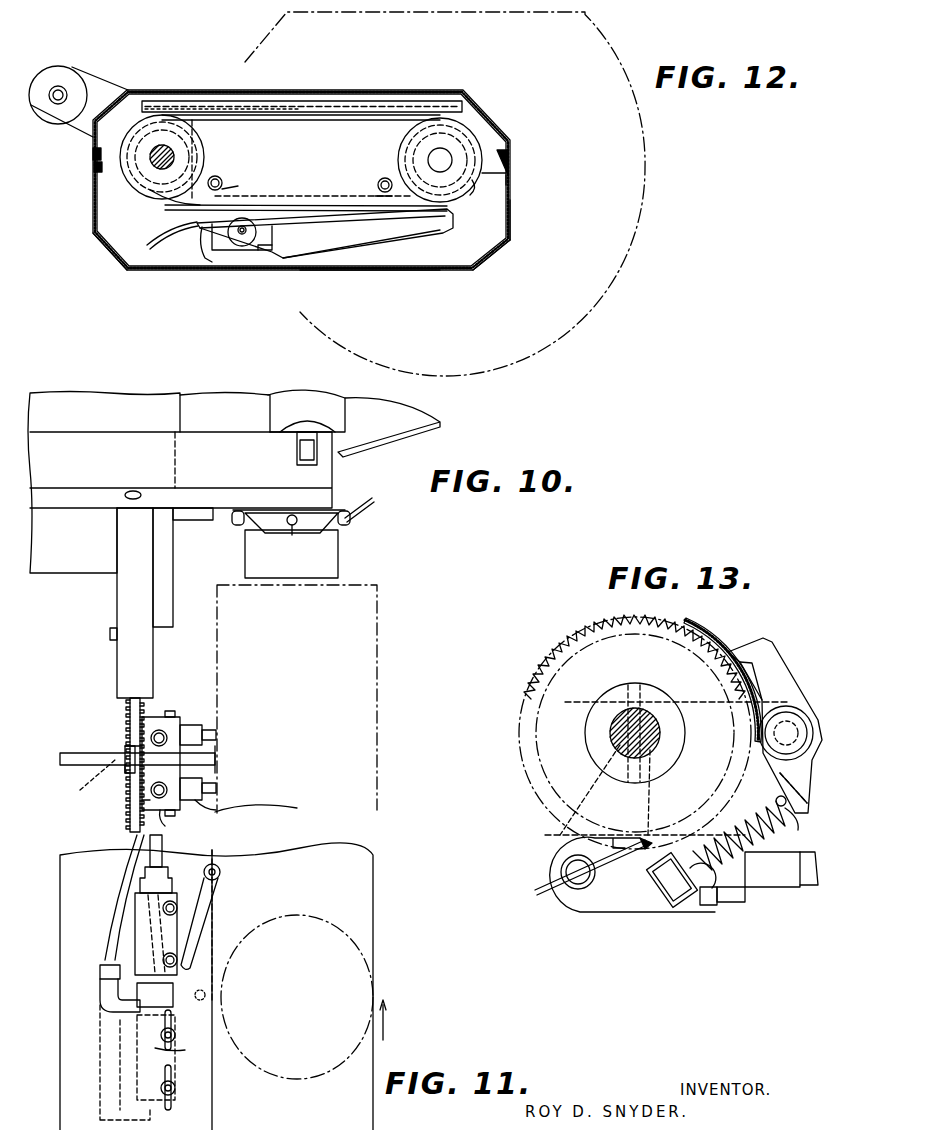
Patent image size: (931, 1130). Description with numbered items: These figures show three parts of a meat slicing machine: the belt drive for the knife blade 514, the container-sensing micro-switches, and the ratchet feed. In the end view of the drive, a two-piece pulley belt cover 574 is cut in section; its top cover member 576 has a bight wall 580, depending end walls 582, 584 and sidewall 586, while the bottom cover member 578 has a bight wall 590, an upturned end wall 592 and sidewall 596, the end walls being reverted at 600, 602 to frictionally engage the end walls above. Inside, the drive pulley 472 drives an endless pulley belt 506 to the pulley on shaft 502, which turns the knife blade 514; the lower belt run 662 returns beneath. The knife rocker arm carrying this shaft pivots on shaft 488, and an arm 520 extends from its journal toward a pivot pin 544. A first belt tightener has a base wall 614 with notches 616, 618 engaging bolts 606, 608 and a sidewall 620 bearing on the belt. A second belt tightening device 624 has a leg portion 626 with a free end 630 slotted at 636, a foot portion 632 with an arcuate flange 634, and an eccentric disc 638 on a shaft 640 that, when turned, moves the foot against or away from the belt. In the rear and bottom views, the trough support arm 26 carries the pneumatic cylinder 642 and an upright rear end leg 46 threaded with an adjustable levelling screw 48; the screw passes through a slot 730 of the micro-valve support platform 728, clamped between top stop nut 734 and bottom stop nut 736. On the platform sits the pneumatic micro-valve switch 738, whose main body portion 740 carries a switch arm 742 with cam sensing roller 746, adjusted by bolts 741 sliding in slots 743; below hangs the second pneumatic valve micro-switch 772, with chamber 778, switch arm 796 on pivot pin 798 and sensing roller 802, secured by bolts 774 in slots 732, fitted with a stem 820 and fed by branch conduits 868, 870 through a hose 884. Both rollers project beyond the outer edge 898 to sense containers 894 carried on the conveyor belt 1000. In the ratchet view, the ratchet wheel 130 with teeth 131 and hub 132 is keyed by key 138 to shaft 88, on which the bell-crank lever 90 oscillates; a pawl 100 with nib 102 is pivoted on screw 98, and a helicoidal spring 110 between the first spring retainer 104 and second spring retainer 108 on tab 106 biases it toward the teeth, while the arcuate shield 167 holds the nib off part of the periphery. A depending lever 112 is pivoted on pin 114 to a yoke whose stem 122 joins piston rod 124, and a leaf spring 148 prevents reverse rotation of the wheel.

In FIG. 12, the arm 520 is at (98, 97).
In FIG. 12, the top cover member 576 is at (468, 84).
In FIG. 12, the bottom cover member 578 is at (440, 270).
In FIG. 12, the end wall 592 is at (93, 228).
In FIG. 12, the pivot pin 544 is at (511, 222).
In FIG. 12, the sidewall 596 is at (492, 243).
In FIG. 12, the bight wall 580 is at (278, 93).
In FIG. 12, the sidewall 620 is at (333, 100).
In FIG. 12, the sidewall 586 is at (345, 97).
In FIG. 12, the belt lower run 662 is at (386, 125).
In FIG. 12, the shaft 488 is at (158, 160).
In FIG. 12, the drive pulley 472 is at (165, 203).
In FIG. 12, the shaft 502 is at (450, 160).
In FIG. 12, the end wall 584 is at (470, 125).
In FIG. 12, the endless pulley belt 506 is at (455, 132).
In FIG. 12, the knife blade 514 is at (650, 138).
In FIG. 12, the reverted portion 602 is at (508, 150).
In FIG. 12, the two-piece pulley belt cover 574 is at (523, 174).
In FIG. 12, the bolt 606 is at (218, 178).
In FIG. 12, the notch 616 is at (244, 188).
In FIG. 12, the base wall 614 is at (312, 184).
In FIG. 12, the bolt 608 is at (382, 180).
In FIG. 12, the notch 618 is at (370, 196).
In FIG. 12, the end wall 582 is at (92, 150).
In FIG. 12, the reverted portion 600 is at (95, 170).
In FIG. 12, the foot portion 632 is at (324, 220).
In FIG. 12, the second belt tightening device 624 is at (380, 251).
In FIG. 12, the flange 634 is at (168, 262).
In FIG. 12, the free end 630 is at (218, 250).
In FIG. 12, the bight wall 590 is at (232, 252).
In FIG. 12, the shaft 640 is at (240, 237).
In FIG. 12, the eccentric disc 638 is at (244, 238).
In FIG. 12, the slot 636 is at (262, 262).
In FIG. 12, the leg portion 626 is at (356, 266).
In FIG. 10, the trough support arm 26 is at (180, 416).
In FIG. 10, the pneumatic cylinder 642 is at (378, 390).
In FIG. 10, the rear end leg 46 is at (117, 660).
In FIG. 10, the container 894 is at (378, 672).
In FIG. 11, the container 894 is at (374, 982).
In FIG. 10, the adjustable levelling screw 48 is at (130, 714).
In FIG. 10, the pneumatic micro-valve switch 738 is at (156, 712).
In FIG. 10, the second branch conduit 868 is at (165, 733).
In FIG. 11, the second branch conduit 868 is at (100, 965).
In FIG. 10, the third branch conduit 870 is at (168, 790).
In FIG. 10, the switch arm 742 is at (192, 724).
In FIG. 10, the cam sensing roller 746 is at (214, 735).
In FIG. 11, the cam sensing roller 746 is at (215, 1012).
In FIG. 10, the main body portion 740 is at (141, 736).
In FIG. 10, the top stop nut 734 is at (122, 752).
In FIG. 10, the micro-valve support platform 728 is at (73, 766).
In FIG. 10, the slot 730 is at (81, 783).
In FIG. 10, the bottom stop nut 736 is at (125, 770).
In FIG. 10, the chamber 778 is at (148, 800).
In FIG. 10, the outer edge 898 is at (216, 760).
In FIG. 11, the outer edge 898 is at (216, 905).
In FIG. 10, the sensing roller 802 is at (212, 790).
In FIG. 11, the sensing roller 802 is at (216, 870).
In FIG. 10, the switch arm 796 is at (200, 805).
In FIG. 11, the switch arm 796 is at (196, 923).
In FIG. 10, the second pneumatic valve micro-switch 772 is at (162, 815).
In FIG. 11, the conveyor belt 1000 is at (382, 869).
In FIG. 11, the bolt 741 is at (177, 908).
In FIG. 11, the pivot pin 798 is at (180, 965).
In FIG. 11, the stem 820 is at (162, 853).
In FIG. 11, the hose 884 is at (108, 925).
In FIG. 11, the slot 743 is at (175, 880).
In FIG. 11, the slot 732 is at (180, 1040).
In FIG. 11, the bolt 774 is at (200, 1042).
In FIG. 13, the ratchet wheel 130 is at (598, 623).
In FIG. 13, the teeth 131 is at (645, 614).
In FIG. 13, the hub 132 is at (686, 753).
In FIG. 13, the shaft 88 is at (628, 760).
In FIG. 13, the key 138 is at (674, 701).
In FIG. 13, the shield 167 is at (700, 636).
In FIG. 13, the nib 102 is at (738, 655).
In FIG. 13, the pawl 100 is at (768, 648).
In FIG. 13, the screw 98 is at (790, 720).
In FIG. 13, the bell-crank lever 90 is at (768, 786).
In FIG. 13, the depending lever 112 is at (560, 835).
In FIG. 13, the pivot pin 114 is at (582, 908).
In FIG. 13, the leaf spring 148 is at (552, 895).
In FIG. 13, the tab 106 is at (680, 905).
In FIG. 13, the second spring retainer 108 is at (708, 906).
In FIG. 13, the stem 122 is at (730, 903).
In FIG. 13, the piston rod 124 is at (777, 880).
In FIG. 13, the helicoidal spring 110 is at (752, 836).
In FIG. 13, the first spring retainer 104 is at (797, 820).